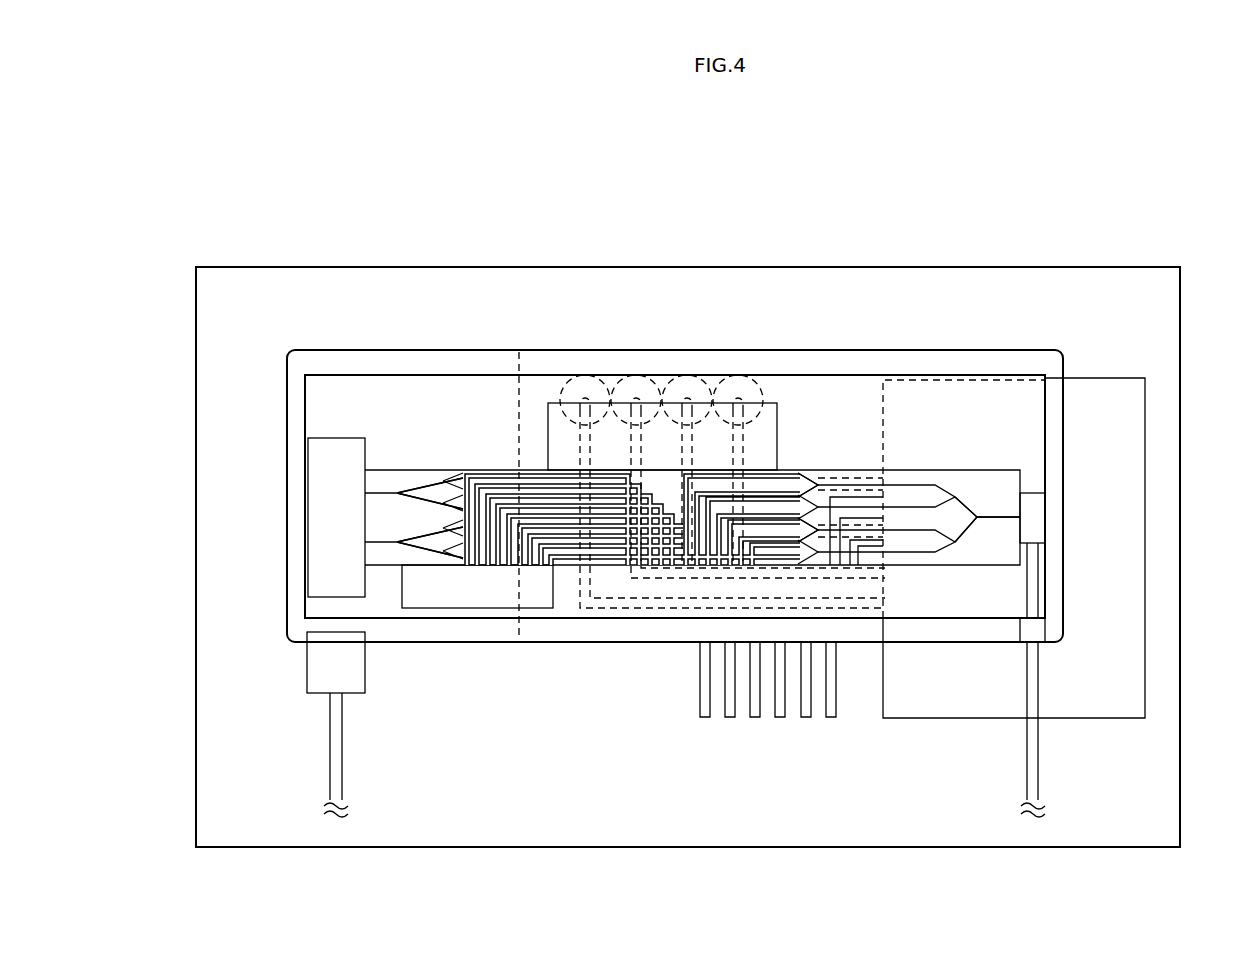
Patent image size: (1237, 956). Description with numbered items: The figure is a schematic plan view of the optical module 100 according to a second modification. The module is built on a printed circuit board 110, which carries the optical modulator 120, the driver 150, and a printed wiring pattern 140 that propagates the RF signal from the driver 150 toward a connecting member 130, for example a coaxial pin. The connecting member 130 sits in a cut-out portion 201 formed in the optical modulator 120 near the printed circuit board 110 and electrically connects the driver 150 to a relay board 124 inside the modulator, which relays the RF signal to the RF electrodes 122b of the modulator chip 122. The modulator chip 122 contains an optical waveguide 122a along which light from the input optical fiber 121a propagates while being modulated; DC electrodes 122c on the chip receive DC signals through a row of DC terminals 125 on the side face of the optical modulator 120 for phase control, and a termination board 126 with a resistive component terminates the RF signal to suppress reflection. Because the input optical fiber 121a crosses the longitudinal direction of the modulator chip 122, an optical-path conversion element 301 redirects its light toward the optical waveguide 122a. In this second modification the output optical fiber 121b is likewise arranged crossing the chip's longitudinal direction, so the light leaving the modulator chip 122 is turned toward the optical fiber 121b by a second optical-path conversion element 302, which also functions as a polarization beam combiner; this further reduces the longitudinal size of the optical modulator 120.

The optical module 100 is at (1182, 202).
The printed circuit board 110 is at (971, 267).
The optical modulator 120 is at (910, 351).
The optical fiber 121a is at (1040, 770).
The optical fiber 121b is at (344, 770).
The modulator chip 122 is at (962, 470).
The optical waveguide 122a is at (997, 520).
The RF electrode 122b is at (538, 550).
The DC electrode 122c is at (793, 492).
The relay board 124 is at (548, 428).
The DC terminal 125 is at (837, 702).
The termination board 126 is at (447, 608).
The connecting member 130 is at (600, 377).
The wiring pattern 140 is at (638, 610).
The driver 150 is at (921, 718).
The cut-out portion 201 is at (518, 413).
The optical-path conversion element 301 is at (1034, 492).
The optical-path conversion element 302 is at (335, 437).